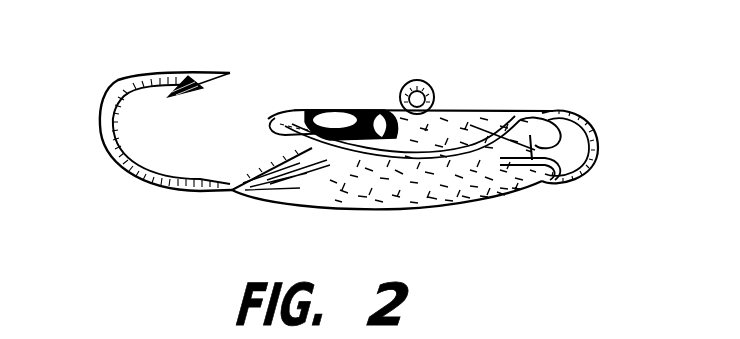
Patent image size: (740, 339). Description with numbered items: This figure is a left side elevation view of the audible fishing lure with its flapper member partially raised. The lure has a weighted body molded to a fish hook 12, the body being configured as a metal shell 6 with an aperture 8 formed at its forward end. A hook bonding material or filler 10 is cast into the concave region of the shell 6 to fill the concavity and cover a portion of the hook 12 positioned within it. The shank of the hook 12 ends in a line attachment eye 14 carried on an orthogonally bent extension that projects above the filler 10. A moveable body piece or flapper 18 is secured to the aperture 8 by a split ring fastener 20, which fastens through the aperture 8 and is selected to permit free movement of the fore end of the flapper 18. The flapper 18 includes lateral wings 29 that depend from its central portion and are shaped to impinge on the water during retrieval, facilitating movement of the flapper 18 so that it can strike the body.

The metal shell 6 is at (427, 210).
The aperture 8 is at (532, 188).
The hook bonding material or filler 10 is at (273, 151).
The fish hook 12 is at (100, 100).
The line attachment eye 14 is at (429, 80).
The flapper 18 is at (299, 88).
The split ring fastener 20 is at (585, 122).
The lateral wings 29 is at (325, 158).